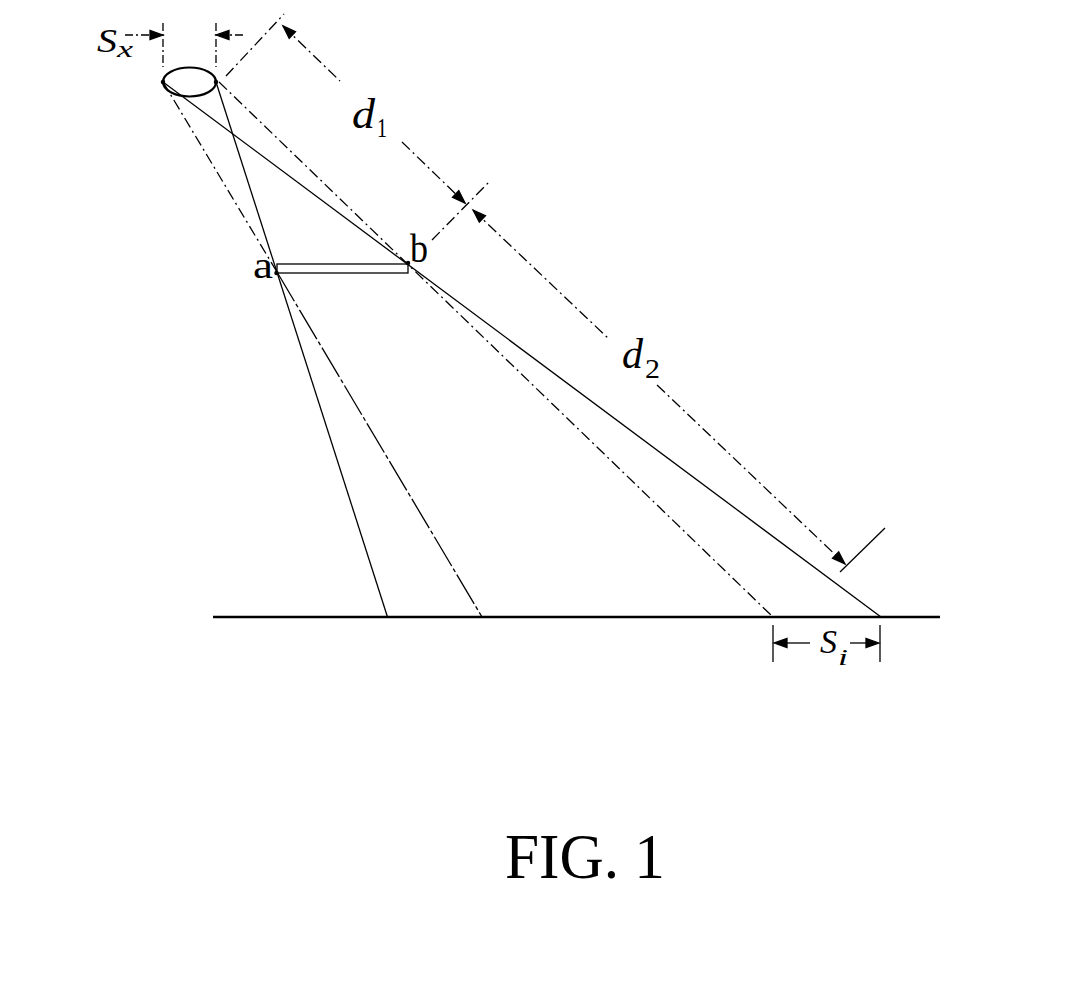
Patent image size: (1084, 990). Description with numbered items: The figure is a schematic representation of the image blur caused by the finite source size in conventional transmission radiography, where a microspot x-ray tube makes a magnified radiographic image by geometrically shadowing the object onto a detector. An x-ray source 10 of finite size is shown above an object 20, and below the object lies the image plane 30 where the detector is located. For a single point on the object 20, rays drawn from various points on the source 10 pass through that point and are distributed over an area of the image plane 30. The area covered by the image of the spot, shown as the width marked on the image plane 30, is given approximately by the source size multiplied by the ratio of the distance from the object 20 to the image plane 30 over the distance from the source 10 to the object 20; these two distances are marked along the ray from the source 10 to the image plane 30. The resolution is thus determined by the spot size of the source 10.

The source 10 is at (160, 82).
The object 20 is at (305, 283).
The image plane 30 is at (315, 600).